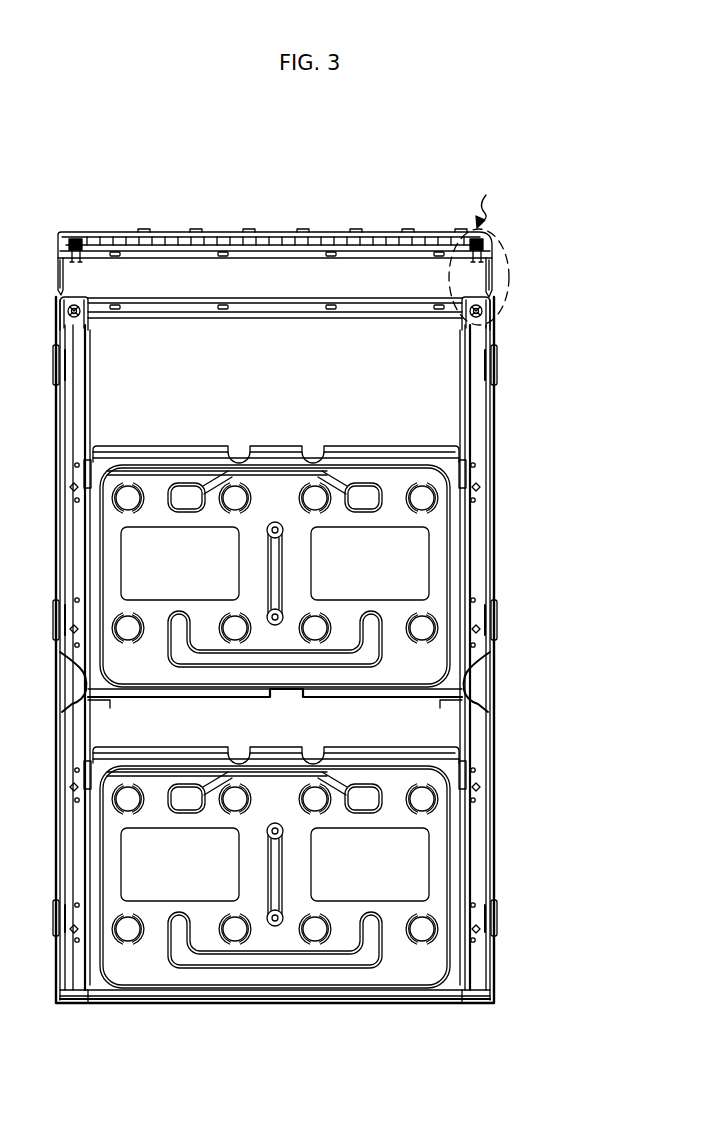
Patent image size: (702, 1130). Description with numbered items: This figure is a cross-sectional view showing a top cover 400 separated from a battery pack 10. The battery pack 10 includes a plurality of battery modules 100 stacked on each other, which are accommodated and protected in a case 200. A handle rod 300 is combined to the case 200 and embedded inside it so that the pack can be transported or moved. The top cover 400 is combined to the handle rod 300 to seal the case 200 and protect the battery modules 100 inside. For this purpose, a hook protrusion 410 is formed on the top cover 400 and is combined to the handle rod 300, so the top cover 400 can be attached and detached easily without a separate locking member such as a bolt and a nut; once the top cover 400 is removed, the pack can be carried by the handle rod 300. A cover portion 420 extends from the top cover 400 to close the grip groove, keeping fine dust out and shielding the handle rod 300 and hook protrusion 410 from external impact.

The battery pack 10 is at (86, 182).
The battery module 100 is at (430, 556).
The case 200 is at (493, 418).
The handle rod 300 is at (478, 312).
The top cover 400 is at (164, 228).
The hook protrusion 410 is at (489, 250).
The cover portion 420 is at (484, 283).